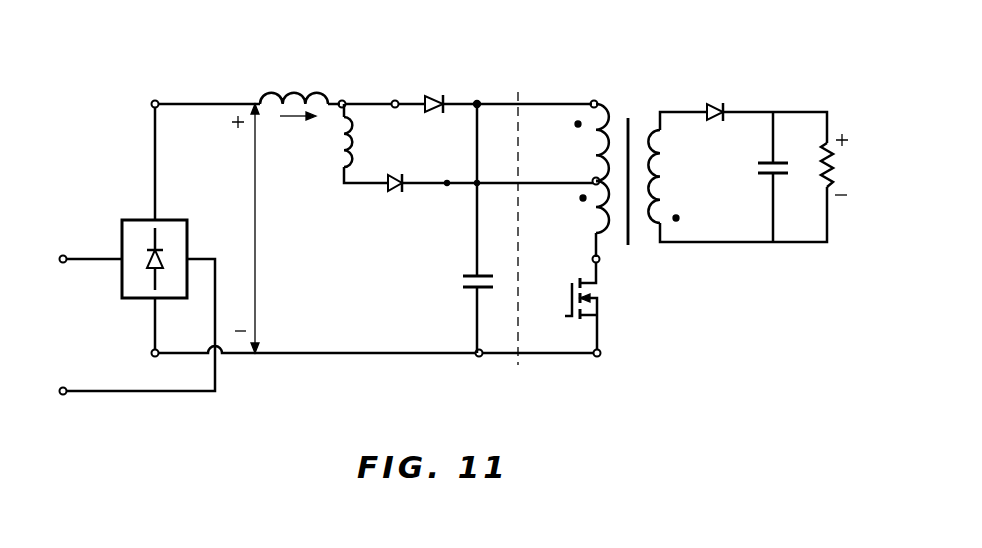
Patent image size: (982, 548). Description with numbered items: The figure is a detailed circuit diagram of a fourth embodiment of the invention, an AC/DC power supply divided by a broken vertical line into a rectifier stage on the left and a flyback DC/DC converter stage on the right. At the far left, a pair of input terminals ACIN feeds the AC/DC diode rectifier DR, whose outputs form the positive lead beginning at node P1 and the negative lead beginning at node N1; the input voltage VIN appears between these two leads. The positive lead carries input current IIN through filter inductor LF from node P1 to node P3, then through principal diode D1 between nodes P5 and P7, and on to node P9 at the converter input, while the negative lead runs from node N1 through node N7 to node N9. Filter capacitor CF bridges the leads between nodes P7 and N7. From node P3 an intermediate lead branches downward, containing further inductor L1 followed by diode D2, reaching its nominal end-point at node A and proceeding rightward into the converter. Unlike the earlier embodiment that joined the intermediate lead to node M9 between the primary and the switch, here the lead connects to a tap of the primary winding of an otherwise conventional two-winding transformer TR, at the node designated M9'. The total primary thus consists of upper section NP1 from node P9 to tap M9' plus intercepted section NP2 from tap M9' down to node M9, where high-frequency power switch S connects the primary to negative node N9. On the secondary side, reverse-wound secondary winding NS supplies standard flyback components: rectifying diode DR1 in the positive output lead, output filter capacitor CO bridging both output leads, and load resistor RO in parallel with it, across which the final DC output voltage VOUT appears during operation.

The positive lead node P1 is at (153, 103).
The positive lead node P3 is at (342, 101).
The positive lead node P5 is at (395, 101).
The positive lead node P7 is at (477, 101).
The positive lead node P9 is at (594, 100).
The negative lead node N1 is at (155, 357).
The negative lead node N7 is at (479, 357).
The negative lead node N9 is at (600, 358).
The intermediate node M9 is at (643, 272).
The primary winding tap node M9' is at (561, 197).
The intermediate lead node A is at (447, 185).
The AC/DC diode rectifier DR is at (152, 246).
The filter inductor LF is at (294, 82).
The further inductor L1 is at (363, 142).
The principal diode D1 is at (441, 90).
The diode D2 is at (395, 193).
The filter capacitor CF is at (466, 288).
The two-winding transformer TR is at (623, 164).
The primary winding section NP1 is at (577, 142).
The intercepted primary winding section NP2 is at (570, 219).
The secondary winding NS is at (671, 176).
The high-frequency power switch S is at (590, 298).
The rectifying diode DR1 is at (725, 98).
The output filter capacitor CO is at (766, 177).
The load resistor RO is at (826, 168).
The input voltage VIN is at (255, 228).
The input current IIN is at (298, 134).
The AC input terminals ACIN is at (54, 325).
The DC output voltage VOUT is at (859, 164).